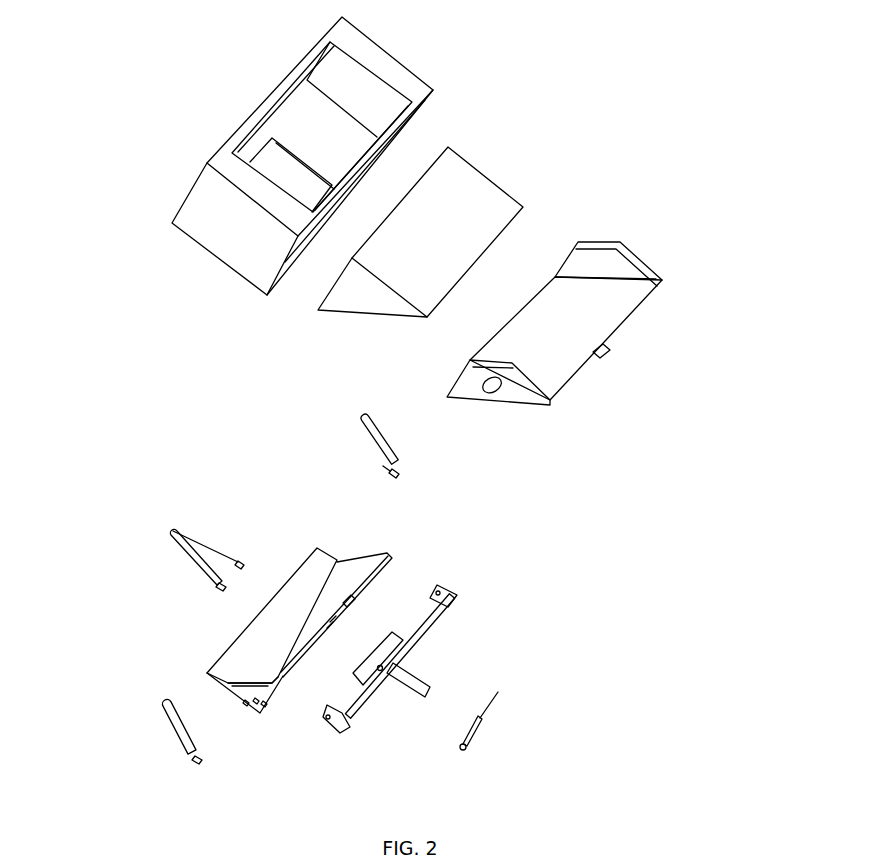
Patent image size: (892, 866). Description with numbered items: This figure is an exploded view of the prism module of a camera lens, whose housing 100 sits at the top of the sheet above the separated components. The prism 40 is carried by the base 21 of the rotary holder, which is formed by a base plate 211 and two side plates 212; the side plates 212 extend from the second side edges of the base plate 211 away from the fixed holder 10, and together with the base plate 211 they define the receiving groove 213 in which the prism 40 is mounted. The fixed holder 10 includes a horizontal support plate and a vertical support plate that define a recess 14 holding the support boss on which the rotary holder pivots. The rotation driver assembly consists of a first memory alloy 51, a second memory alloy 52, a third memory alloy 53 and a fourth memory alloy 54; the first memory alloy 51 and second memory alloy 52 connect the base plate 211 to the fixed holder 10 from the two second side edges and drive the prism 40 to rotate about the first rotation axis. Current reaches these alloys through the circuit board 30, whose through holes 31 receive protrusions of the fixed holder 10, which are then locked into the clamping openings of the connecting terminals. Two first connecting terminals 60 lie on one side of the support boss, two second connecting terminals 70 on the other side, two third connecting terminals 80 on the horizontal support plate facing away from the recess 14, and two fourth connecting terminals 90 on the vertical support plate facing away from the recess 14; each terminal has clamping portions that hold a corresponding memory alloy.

The housing 100 is at (382, 63).
The prism 40 is at (475, 193).
The base 21 is at (626, 286).
The base plate 211 is at (600, 320).
The side plates 212 is at (630, 265).
The receiving groove 213 is at (572, 272).
The second memory alloy 52 is at (365, 417).
The second connecting terminals 70 is at (373, 465).
The third memory alloy 53 is at (175, 530).
The third connecting terminals 80 is at (217, 583).
The fixed holder 10 is at (237, 647).
The recess 14 is at (253, 673).
The first memory alloy 51 is at (170, 728).
The first connecting terminals 60 is at (180, 757).
The circuit board 30 is at (447, 617).
The through holes 31 is at (323, 718).
The fourth memory alloy 54 is at (495, 700).
The fourth connecting terminals 90 is at (490, 718).